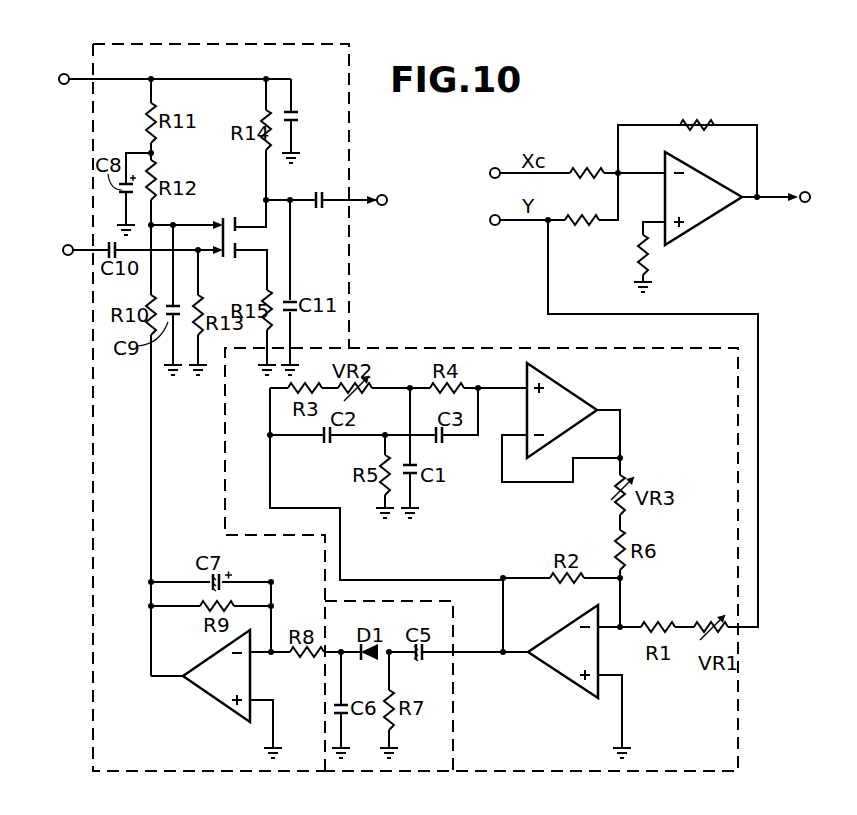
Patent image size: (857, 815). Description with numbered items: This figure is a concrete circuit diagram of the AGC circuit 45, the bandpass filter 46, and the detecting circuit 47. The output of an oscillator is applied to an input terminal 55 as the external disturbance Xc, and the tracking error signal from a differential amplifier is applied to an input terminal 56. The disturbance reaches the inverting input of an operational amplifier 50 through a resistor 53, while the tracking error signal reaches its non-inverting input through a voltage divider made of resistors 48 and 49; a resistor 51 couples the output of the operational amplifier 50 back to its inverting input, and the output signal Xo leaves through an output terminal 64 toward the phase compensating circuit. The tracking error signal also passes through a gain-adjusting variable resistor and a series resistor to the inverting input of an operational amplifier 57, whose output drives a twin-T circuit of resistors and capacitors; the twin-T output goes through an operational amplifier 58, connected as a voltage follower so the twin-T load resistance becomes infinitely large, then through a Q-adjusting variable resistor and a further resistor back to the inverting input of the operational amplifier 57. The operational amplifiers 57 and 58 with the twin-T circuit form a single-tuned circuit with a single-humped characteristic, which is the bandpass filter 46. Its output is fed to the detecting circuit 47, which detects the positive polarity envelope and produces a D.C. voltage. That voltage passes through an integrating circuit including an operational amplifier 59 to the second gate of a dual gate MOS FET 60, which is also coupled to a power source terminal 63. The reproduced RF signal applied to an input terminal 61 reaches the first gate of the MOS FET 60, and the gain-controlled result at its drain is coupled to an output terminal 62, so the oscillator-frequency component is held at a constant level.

The AGC circuit 45 is at (214, 42).
The bandpass filter 46 is at (412, 346).
The detecting circuit 47 is at (366, 779).
The resistor 48 is at (581, 229).
The resistor 49 is at (650, 258).
The operational amplifier 50 is at (705, 174).
The resistor 51 is at (694, 124).
The resistor 53 is at (582, 166).
The input terminal 55 is at (496, 167).
The input terminal 56 is at (496, 226).
The operational amplifier 57 is at (560, 672).
The operational amplifier 58 is at (560, 390).
The operational amplifier 59 is at (205, 692).
The dual gate MOS FET 60 is at (229, 218).
The input terminal 61 is at (68, 244).
The output terminal 62 is at (380, 194).
The power source terminal 63 is at (65, 73).
The output terminal 64 is at (804, 204).